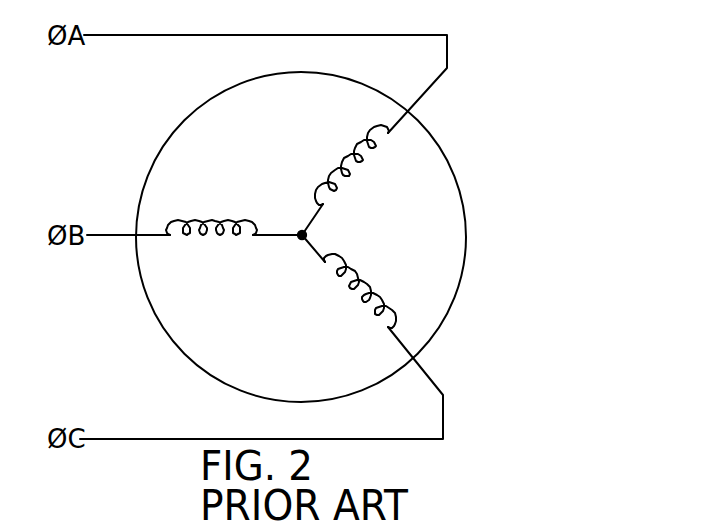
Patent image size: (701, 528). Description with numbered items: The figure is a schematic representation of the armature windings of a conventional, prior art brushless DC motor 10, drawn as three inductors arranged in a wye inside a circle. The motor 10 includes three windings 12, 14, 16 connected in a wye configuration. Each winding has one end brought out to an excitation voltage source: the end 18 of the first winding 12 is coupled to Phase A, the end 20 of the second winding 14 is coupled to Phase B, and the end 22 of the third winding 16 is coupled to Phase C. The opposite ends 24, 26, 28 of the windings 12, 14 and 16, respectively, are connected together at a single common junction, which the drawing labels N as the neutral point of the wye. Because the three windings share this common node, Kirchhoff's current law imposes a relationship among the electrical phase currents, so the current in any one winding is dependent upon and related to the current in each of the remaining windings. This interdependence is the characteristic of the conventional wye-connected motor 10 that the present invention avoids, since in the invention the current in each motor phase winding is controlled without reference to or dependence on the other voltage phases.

The brushless DC motor 10 is at (540, 131).
The winding 12 is at (344, 163).
The winding 14 is at (217, 220).
The winding 16 is at (370, 291).
The end 18 is at (427, 90).
The end 20 is at (102, 235).
The end 22 is at (426, 373).
The opposite end 24 is at (316, 214).
The opposite end 26 is at (280, 234).
The opposite end 28 is at (312, 250).
The neutral point N is at (306, 235).